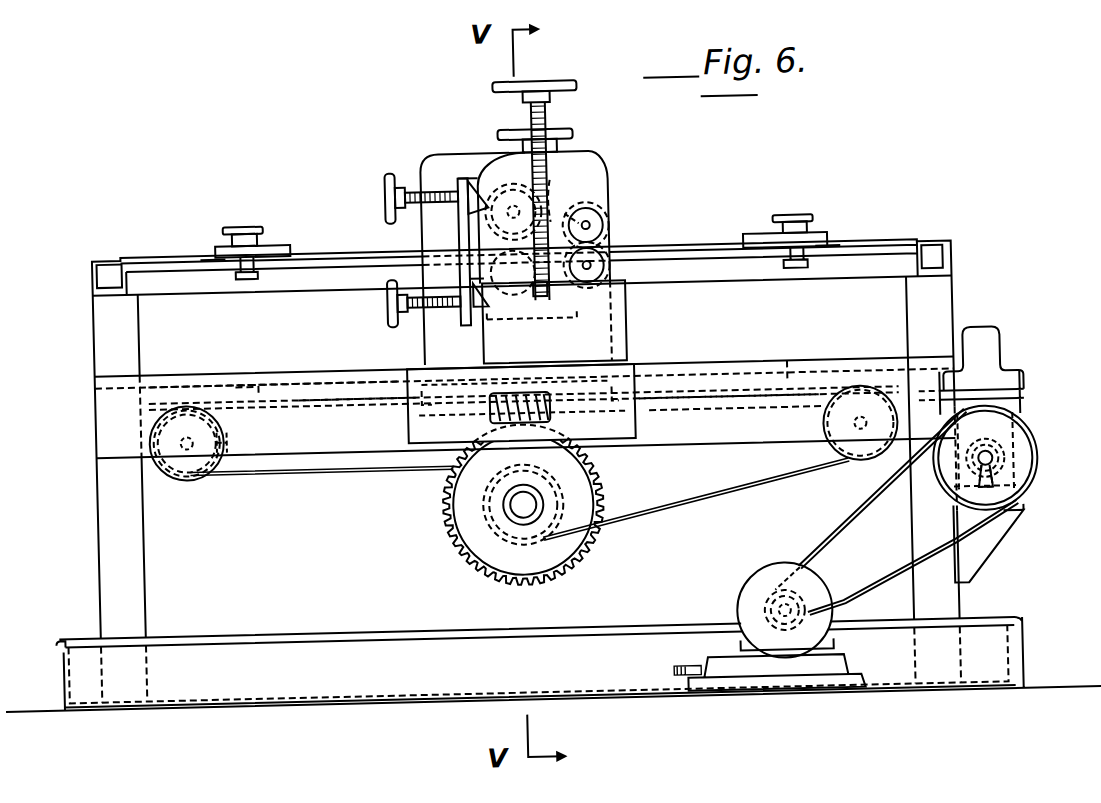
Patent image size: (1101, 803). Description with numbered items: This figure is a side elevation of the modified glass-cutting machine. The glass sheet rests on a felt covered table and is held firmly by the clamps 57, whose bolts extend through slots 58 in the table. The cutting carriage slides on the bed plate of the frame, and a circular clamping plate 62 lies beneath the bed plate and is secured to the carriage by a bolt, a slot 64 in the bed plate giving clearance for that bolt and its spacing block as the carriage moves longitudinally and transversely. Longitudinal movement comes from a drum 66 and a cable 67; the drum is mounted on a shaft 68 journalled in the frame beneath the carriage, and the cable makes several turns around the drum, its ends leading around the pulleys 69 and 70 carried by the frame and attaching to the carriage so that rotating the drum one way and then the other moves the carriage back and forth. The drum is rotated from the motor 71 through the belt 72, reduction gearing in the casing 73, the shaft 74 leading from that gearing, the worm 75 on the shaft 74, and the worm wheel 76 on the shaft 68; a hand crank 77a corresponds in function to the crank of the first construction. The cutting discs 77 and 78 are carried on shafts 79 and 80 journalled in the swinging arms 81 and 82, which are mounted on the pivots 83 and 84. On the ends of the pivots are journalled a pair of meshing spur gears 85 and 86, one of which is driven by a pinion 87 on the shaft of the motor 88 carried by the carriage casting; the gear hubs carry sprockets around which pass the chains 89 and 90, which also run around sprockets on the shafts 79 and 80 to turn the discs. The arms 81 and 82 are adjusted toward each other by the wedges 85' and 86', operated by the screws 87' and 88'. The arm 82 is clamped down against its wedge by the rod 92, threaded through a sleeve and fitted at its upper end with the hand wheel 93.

The clamps 57 is at (282, 239).
The slots 58 is at (212, 254).
The circular clamping plate 62 is at (395, 405).
The slot 64 is at (262, 378).
The drum 66 is at (562, 502).
The cable 67 is at (300, 464).
The shaft 68 is at (521, 506).
The pulley 69 is at (824, 428).
The pulley 70 is at (228, 431).
The motor 71 is at (752, 598).
The belt 72 is at (882, 578).
The casing 73 is at (990, 343).
The shaft 74 is at (738, 412).
The worm 75 is at (490, 410).
The worm wheel 76 is at (443, 536).
The cutting disc 77 is at (484, 243).
The hand crank 77a is at (1018, 496).
The cutting disc 78 is at (484, 277).
The shaft 79 is at (510, 198).
The shaft 80 is at (497, 318).
The swinging arm 81 is at (596, 212).
The swinging arm 82 is at (616, 326).
The pivot 83 is at (605, 220).
The pivot 84 is at (612, 290).
The spur gear 85 is at (621, 213).
The wedge 85' is at (437, 175).
The spur gear 86 is at (624, 266).
The wedge 86' is at (461, 313).
The pinion 87 is at (588, 164).
The screw 87' is at (396, 189).
The motor 88 is at (537, 256).
The screw 88' is at (398, 306).
The chain 89 is at (582, 130).
The chain 90 is at (525, 310).
The rod 92 is at (538, 101).
The hand wheel 93 is at (548, 81).